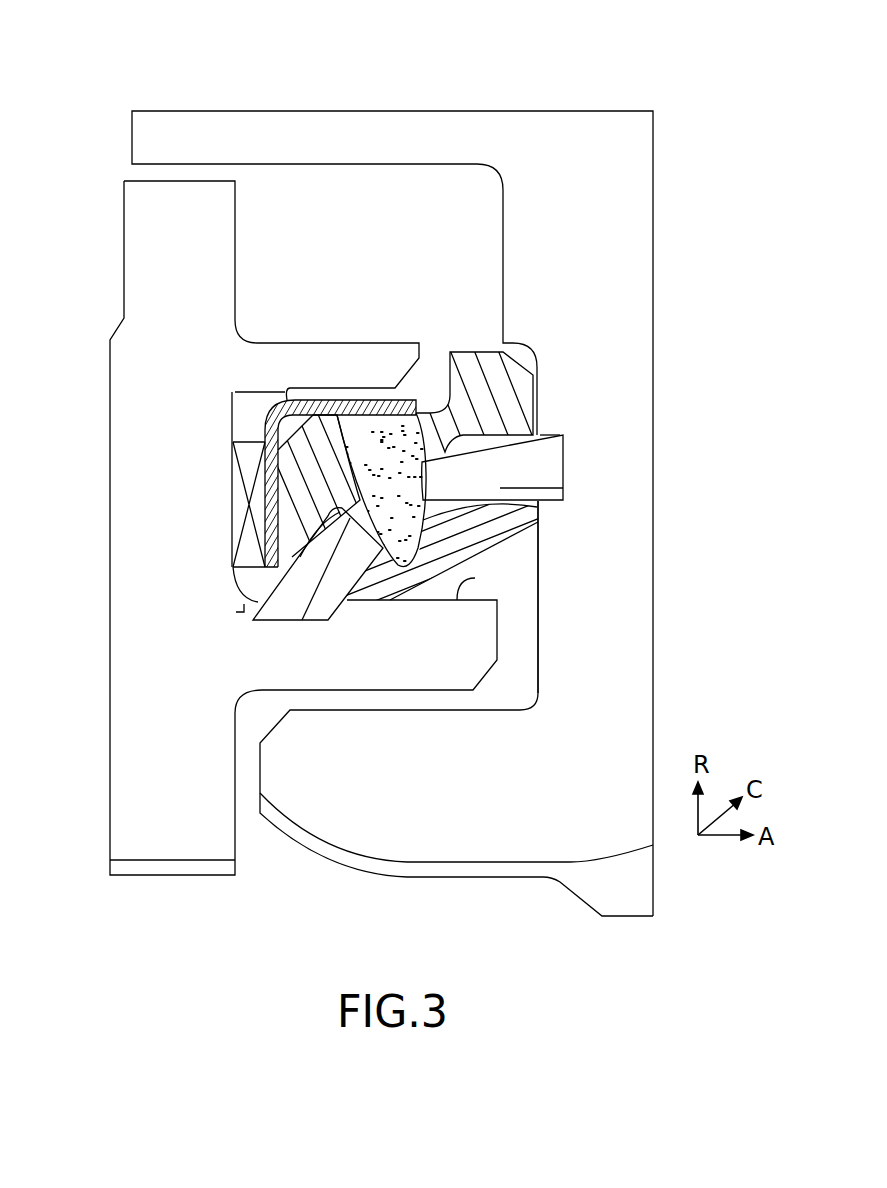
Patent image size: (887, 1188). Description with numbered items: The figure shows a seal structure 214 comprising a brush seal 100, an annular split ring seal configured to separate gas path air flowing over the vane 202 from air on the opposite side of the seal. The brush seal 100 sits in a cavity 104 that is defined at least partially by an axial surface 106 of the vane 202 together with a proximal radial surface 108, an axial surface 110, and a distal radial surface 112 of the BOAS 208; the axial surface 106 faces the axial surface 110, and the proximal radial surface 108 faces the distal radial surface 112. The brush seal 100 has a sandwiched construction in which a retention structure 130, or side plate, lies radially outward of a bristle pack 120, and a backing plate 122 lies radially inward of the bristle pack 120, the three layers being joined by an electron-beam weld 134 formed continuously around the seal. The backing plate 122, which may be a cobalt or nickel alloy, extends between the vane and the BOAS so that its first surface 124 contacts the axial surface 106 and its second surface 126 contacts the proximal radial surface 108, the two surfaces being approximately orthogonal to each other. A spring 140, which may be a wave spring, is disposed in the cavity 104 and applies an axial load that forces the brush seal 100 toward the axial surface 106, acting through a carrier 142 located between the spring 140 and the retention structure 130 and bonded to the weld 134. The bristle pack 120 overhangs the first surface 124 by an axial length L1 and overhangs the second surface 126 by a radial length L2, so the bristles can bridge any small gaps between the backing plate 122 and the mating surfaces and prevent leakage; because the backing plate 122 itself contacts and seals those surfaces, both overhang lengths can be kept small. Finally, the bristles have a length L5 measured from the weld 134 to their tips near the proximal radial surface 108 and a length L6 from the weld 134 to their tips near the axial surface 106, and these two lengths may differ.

The brush seal 100 is at (553, 389).
The cavity 104 is at (432, 348).
The axial surface of vane 106 is at (537, 640).
The proximal radial surface of BOAS 108 is at (475, 578).
The axial surface of BOAS 110 is at (236, 426).
The distal radial surface of BOAS 112 is at (250, 398).
The bristle pack 120 is at (492, 467).
The backing plate 122 is at (488, 515).
The first surface of backing plate 124 is at (540, 522).
The second surface of backing plate 126 is at (362, 622).
The retention structure 130 is at (295, 512).
The weld 134 is at (382, 490).
The spring 140 is at (236, 497).
The carrier 142 is at (348, 412).
The vane 202 is at (392, 513).
The BOAS 208 is at (303, 528).
The seal structure 214 is at (115, 85).
The axial overhang length L1 is at (550, 413).
The radial overhang length L2 is at (230, 614).
The bristle length to proximal radial surface L5 is at (337, 568).
The bristle length to axial surface L6 is at (520, 490).